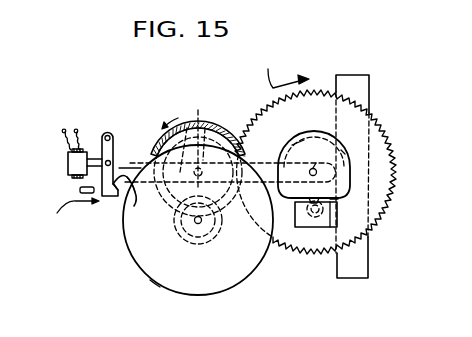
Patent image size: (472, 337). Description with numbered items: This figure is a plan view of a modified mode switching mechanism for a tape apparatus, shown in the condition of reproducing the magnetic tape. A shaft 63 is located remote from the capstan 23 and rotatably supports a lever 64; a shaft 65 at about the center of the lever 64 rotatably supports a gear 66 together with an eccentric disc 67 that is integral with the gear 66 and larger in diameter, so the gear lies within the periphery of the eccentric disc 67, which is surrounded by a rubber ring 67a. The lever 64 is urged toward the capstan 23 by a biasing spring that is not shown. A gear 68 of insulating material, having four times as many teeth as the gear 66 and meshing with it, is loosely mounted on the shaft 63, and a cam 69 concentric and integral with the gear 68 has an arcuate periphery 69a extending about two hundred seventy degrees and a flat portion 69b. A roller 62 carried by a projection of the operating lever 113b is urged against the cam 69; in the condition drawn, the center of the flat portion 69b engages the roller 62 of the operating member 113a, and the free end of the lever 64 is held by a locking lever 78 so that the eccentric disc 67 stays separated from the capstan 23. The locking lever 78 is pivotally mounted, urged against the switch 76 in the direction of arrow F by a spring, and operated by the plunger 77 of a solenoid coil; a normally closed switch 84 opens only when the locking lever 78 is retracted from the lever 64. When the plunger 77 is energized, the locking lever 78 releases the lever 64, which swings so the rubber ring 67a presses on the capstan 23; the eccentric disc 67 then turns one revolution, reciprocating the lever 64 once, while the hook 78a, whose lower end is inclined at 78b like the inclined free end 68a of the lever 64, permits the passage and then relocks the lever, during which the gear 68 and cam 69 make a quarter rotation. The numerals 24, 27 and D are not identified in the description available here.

The capstan 23 is at (198, 224).
The bearing 24 is at (177, 232).
The drum 27 is at (148, 280).
The roller 62 is at (313, 196).
The shaft 63 is at (316, 163).
The lever 64 is at (200, 220).
The shaft 65 is at (198, 132).
The gear 66 is at (168, 112).
The eccentric disc 67 is at (200, 142).
The rubber ring 67a is at (187, 128).
The gear 68 is at (397, 163).
The inclined free end of lever 68a is at (119, 172).
The cam 69 is at (298, 147).
The arcuate periphery 69a is at (341, 150).
The flat portion 69b is at (338, 199).
The normal close switch 76 is at (106, 131).
The plunger 77 is at (68, 160).
The locking lever 78 is at (100, 143).
The hook 78a is at (131, 187).
The inclined lower end of hook 78b is at (117, 191).
The normal close switch 84 is at (80, 190).
The operating member 113a is at (308, 229).
The operating lever 113b is at (370, 272).
The rotation direction D is at (288, 68).
The direction of arrow F is at (72, 219).